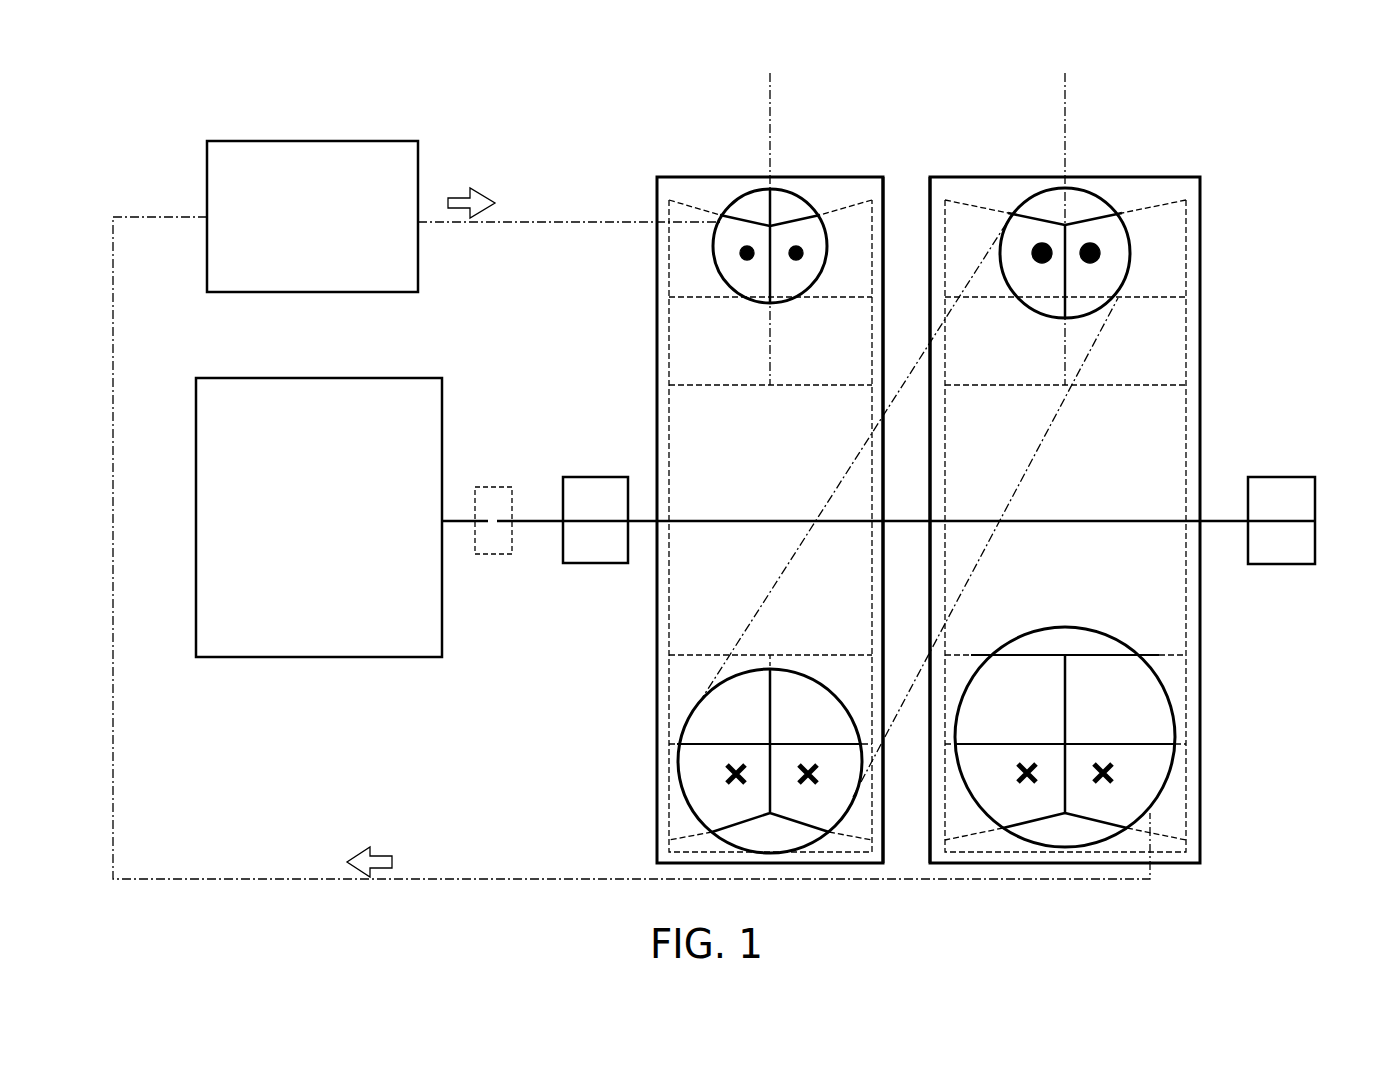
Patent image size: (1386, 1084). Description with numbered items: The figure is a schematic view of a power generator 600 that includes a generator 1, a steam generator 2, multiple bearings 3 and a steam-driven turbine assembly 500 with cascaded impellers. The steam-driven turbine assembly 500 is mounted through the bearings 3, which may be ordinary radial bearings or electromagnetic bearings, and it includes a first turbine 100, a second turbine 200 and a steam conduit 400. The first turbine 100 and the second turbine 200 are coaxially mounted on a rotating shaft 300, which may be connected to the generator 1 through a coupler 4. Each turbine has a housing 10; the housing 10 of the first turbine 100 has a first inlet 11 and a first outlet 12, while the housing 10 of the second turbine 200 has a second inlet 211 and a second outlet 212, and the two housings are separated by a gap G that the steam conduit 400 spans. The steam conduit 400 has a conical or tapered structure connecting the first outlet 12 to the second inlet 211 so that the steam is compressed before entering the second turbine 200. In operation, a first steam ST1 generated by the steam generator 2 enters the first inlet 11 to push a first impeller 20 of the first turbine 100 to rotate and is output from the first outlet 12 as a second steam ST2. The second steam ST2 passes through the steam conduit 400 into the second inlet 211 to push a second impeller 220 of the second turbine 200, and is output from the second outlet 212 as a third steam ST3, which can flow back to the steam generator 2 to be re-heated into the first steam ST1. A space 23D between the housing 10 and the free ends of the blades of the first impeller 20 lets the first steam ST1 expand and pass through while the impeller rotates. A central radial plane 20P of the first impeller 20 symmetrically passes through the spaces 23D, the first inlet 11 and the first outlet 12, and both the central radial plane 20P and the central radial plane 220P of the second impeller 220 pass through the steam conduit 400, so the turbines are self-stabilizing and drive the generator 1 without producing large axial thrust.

The generator 1 is at (245, 645).
The steam generator 2 is at (322, 143).
The bearing 3 is at (588, 557).
The coupler 4 is at (495, 487).
The housing 10 is at (656, 207).
The first inlet 11 is at (728, 214).
The first outlet 12 is at (688, 810).
The first impeller 20 is at (845, 198).
The central radial plane 20P is at (773, 87).
The space 23D is at (755, 212).
The first turbine 100 is at (792, 170).
The second turbine 200 is at (1027, 170).
The second inlet 211 is at (1030, 213).
The second outlet 212 is at (1163, 793).
The second impeller 220 is at (1158, 198).
The central radial plane of the second impeller 220P is at (1068, 87).
The rotating shaft 300 is at (540, 521).
The steam conduit 400 is at (1040, 447).
The steam-driven turbine assembly 500 is at (1243, 180).
The power generator 600 is at (722, 70).
The gap G is at (910, 200).
The first steam ST1 is at (745, 253).
The second steam ST2 is at (1100, 256).
The third steam ST3 is at (1112, 770).